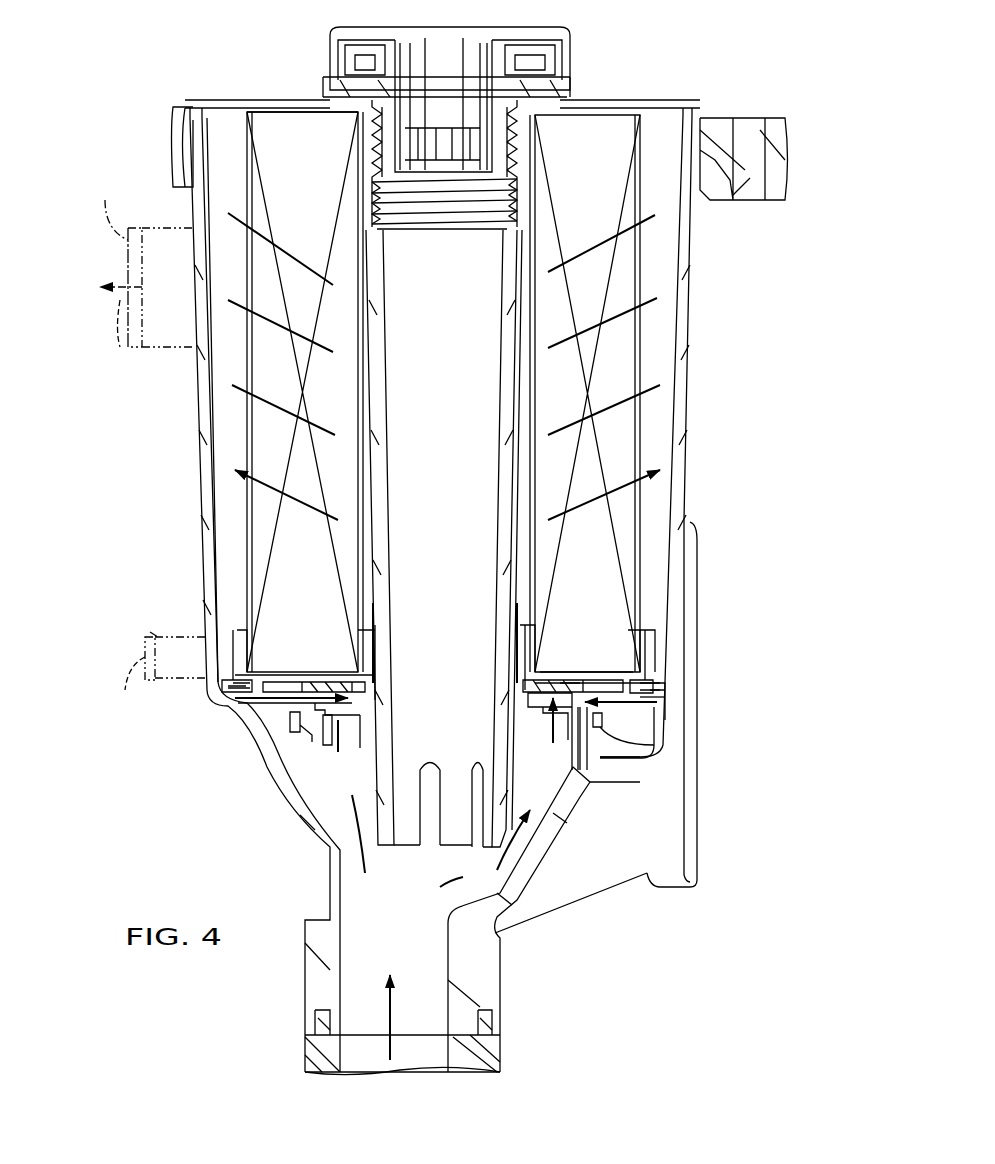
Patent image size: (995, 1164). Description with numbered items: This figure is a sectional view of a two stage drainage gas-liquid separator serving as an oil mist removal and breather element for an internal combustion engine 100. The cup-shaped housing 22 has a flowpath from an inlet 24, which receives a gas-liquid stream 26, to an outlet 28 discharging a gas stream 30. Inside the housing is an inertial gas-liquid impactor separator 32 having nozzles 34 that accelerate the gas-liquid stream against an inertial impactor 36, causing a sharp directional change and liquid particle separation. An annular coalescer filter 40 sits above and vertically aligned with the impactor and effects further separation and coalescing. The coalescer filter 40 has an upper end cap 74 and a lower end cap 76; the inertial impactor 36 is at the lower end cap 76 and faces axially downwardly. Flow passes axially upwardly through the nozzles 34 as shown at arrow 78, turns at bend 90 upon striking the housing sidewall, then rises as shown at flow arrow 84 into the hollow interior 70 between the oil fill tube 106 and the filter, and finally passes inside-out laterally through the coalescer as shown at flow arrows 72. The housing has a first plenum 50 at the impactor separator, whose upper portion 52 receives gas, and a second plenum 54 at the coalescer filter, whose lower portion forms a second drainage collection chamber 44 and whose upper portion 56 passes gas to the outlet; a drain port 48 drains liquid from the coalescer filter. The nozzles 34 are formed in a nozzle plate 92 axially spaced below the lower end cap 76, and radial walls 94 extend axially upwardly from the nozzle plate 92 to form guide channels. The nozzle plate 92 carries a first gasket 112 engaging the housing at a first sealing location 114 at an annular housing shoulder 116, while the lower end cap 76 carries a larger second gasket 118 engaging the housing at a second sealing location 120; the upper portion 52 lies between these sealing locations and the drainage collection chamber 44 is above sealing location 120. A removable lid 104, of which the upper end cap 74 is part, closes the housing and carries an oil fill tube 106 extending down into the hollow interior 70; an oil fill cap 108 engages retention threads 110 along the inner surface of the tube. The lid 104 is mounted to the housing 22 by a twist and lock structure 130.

The housing 22 is at (688, 420).
The inlet 24 is at (362, 972).
The gas-liquid stream 26 is at (393, 1045).
The outlet 28 is at (105, 230).
The gas stream 30 is at (120, 324).
The inertial gas-liquid impactor separator 32 is at (578, 676).
The nozzles 34 is at (345, 735).
The inertial impactor 36 is at (550, 680).
The coalescer filter 40 is at (642, 378).
The second drainage collection chamber 44 is at (660, 650).
The second drain port 48 is at (155, 677).
The first plenum 50 is at (650, 745).
The upper portion of first plenum 52 is at (655, 700).
The second plenum 54 is at (655, 525).
The upper portion of second plenum 56 is at (217, 415).
The hollow interior 70 is at (376, 492).
The flow path through coalescer filter 72 is at (332, 435).
The upper end cap 74 is at (305, 118).
The lower end cap 76 is at (300, 668).
The flow arrow 78 is at (580, 720).
The flow arrow 84 is at (517, 620).
The bend 90 is at (660, 692).
The nozzle plate 92 is at (365, 700).
The radial walls 94 is at (520, 700).
The internal combustion engine 100 is at (503, 1055).
The lid 104 is at (235, 100).
The oil fill tube 106 is at (396, 368).
The oil fill cap 108 is at (560, 27).
The retention threads 110 is at (512, 185).
The first gasket 112 is at (340, 730).
The first sealing location 114 is at (318, 712).
The annular housing shoulder 116 is at (300, 700).
The second gasket 118 is at (655, 660).
The second sealing location 120 is at (665, 685).
The twist and lock structure 130 is at (797, 125).